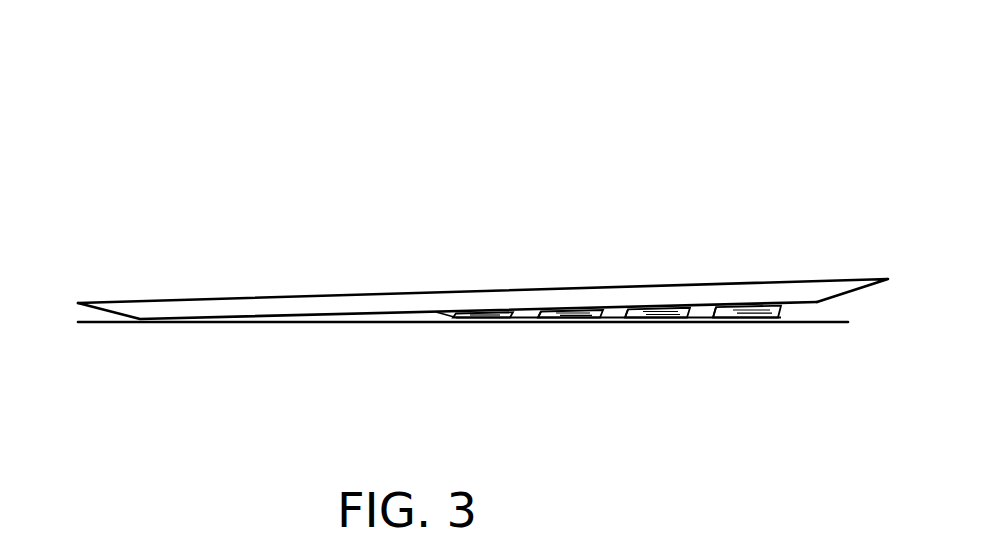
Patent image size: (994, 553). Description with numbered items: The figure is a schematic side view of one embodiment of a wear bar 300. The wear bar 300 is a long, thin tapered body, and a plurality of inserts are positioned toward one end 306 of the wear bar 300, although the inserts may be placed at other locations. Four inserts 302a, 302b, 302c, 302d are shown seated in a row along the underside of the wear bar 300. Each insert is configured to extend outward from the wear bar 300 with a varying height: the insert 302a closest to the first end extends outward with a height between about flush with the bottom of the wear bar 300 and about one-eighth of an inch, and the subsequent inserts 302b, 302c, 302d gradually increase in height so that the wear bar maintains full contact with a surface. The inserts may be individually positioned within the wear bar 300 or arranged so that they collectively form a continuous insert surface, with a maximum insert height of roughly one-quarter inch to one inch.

The wear bar 300 is at (138, 152).
The end of the wear bar 306 is at (833, 261).
The insert 302a is at (488, 323).
The insert 302b is at (575, 323).
The insert 302c is at (660, 323).
The insert 302d is at (747, 323).